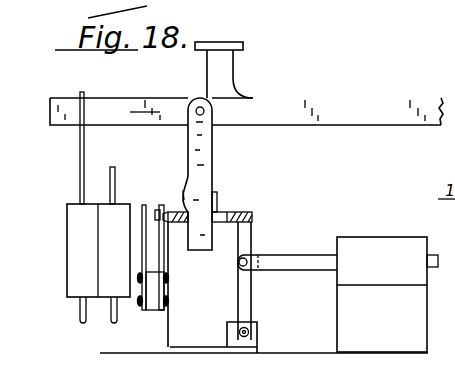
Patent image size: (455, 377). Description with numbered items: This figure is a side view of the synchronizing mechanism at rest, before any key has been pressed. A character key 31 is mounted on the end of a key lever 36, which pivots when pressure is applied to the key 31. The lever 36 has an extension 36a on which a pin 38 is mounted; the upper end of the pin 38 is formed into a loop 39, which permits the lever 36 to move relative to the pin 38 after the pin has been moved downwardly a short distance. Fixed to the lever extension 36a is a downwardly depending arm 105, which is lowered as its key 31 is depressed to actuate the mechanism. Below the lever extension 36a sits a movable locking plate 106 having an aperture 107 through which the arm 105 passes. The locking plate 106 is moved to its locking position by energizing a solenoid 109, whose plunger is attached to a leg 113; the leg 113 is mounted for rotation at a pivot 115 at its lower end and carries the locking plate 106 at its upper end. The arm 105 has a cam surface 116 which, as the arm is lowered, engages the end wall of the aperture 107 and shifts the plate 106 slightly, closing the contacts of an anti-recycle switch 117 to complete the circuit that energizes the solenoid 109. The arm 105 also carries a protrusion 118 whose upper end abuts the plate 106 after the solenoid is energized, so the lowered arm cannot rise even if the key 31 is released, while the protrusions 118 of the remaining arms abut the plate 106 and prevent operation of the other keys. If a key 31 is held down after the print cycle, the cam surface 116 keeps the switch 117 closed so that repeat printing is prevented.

The character key 31 is at (221, 44).
The key lever 36 is at (368, 103).
The lever extension 36a is at (140, 122).
The pin 38 is at (78, 161).
The loop 39 is at (78, 93).
The downwardly depending arm 105 is at (283, 149).
The locking plate 106 is at (232, 220).
The aperture 107 is at (222, 212).
The solenoid 109 is at (393, 274).
The leg 113 is at (238, 304).
The pivot 115 is at (255, 330).
The cam surface 116 is at (183, 192).
The anti-recycle switch 117 is at (183, 268).
The protrusion 118 is at (268, 170).